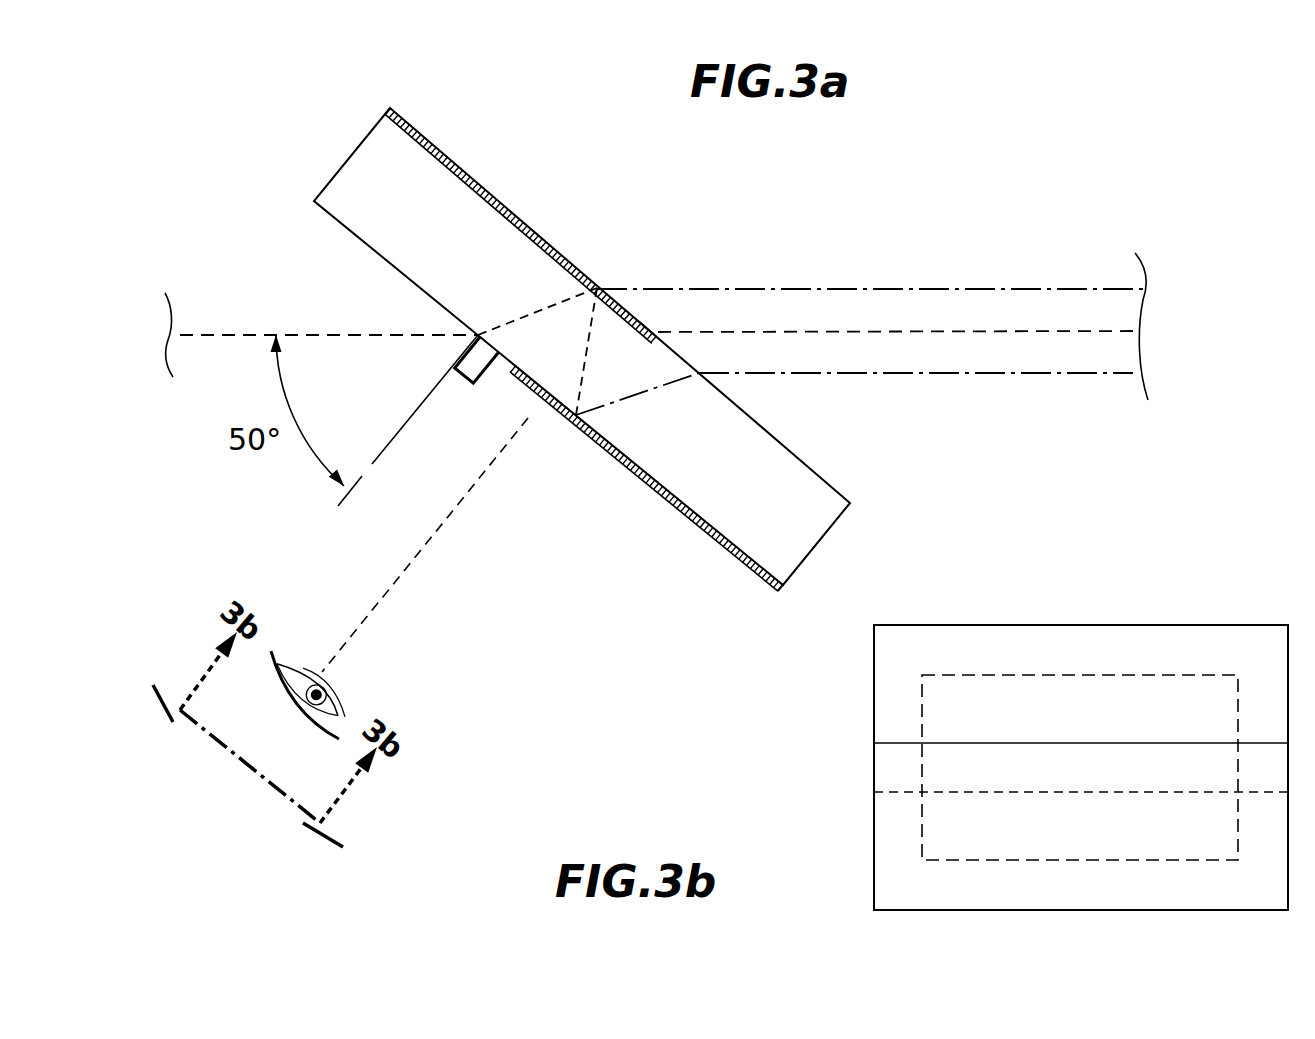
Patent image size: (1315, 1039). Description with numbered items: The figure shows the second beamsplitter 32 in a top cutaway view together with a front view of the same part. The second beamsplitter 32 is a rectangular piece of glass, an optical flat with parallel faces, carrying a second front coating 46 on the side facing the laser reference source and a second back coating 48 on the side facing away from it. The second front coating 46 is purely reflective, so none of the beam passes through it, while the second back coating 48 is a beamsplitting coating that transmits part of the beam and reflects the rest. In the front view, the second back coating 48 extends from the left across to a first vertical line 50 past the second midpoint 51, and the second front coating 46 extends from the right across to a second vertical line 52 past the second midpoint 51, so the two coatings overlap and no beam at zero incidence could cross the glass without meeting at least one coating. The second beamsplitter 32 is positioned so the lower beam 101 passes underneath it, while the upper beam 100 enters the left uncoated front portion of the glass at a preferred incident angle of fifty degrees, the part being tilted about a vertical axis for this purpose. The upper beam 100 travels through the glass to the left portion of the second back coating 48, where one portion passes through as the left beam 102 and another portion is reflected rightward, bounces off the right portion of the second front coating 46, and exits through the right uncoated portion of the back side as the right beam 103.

In FIG. 3a, the second beamsplitter 32 is at (300, 118).
In FIG. 3a, the second front coating 46 is at (668, 510).
In FIG. 3a, the second back coating 48 is at (458, 152).
In FIG. 3a, the first vertical line 50 is at (670, 342).
In FIG. 3b, the first vertical line 50 is at (905, 805).
In FIG. 3b, the second midpoint 51 is at (865, 765).
In FIG. 3a, the second vertical line 52 is at (505, 378).
In FIG. 3b, the second vertical line 52 is at (895, 730).
In FIG. 3a, the upper beam 100 is at (205, 320).
In FIG. 3a, the lower beam 101 is at (845, 350).
In FIG. 3a, the left beam 102 is at (795, 270).
In FIG. 3a, the right beam 103 is at (1015, 390).